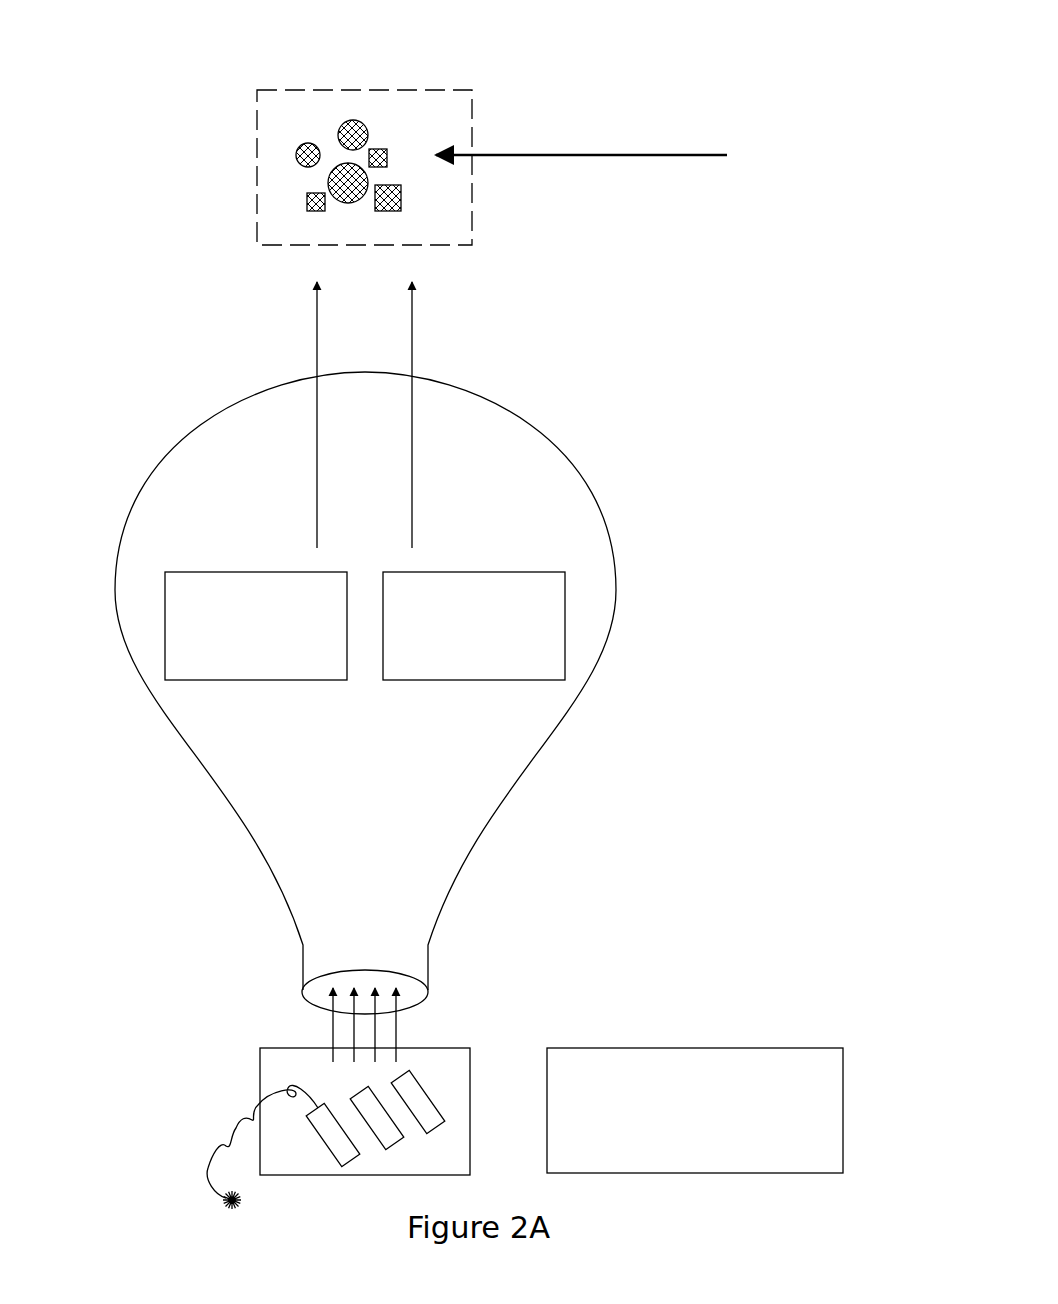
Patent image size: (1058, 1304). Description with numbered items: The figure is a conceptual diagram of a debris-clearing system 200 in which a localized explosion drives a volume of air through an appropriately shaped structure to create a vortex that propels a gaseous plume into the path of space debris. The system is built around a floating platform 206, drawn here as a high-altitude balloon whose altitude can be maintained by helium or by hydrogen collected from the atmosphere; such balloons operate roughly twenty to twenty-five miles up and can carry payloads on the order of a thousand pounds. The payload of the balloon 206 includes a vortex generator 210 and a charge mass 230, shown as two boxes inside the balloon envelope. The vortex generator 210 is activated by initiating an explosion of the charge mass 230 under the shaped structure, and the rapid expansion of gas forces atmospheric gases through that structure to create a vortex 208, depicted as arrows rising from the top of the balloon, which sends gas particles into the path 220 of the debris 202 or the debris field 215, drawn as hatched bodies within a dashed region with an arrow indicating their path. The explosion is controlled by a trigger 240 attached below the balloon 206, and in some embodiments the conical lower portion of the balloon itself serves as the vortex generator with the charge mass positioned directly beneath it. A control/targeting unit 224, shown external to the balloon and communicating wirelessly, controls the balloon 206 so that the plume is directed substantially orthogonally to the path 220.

The debris-clearing system 200 is at (788, 82).
The debris 202 is at (284, 194).
The debris field 215 is at (263, 90).
The path 220 is at (596, 156).
The vortex 208 is at (415, 322).
The floating platform 206 is at (514, 785).
The vortex generator 210 is at (165, 672).
The charge mass 230 is at (565, 675).
The trigger 240 is at (448, 1050).
The control/targeting unit 224 is at (820, 1050).